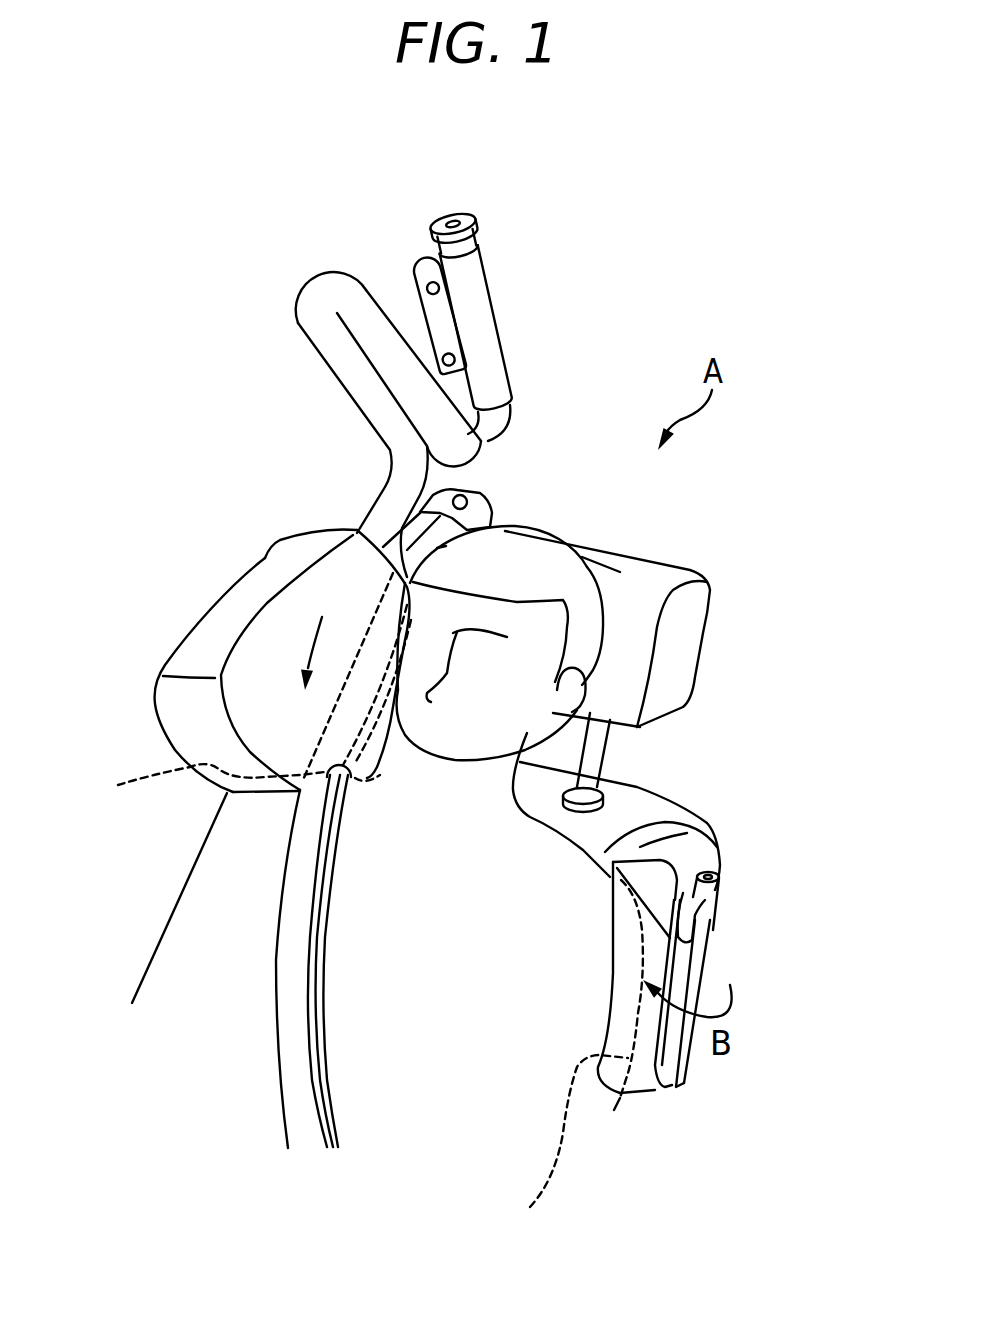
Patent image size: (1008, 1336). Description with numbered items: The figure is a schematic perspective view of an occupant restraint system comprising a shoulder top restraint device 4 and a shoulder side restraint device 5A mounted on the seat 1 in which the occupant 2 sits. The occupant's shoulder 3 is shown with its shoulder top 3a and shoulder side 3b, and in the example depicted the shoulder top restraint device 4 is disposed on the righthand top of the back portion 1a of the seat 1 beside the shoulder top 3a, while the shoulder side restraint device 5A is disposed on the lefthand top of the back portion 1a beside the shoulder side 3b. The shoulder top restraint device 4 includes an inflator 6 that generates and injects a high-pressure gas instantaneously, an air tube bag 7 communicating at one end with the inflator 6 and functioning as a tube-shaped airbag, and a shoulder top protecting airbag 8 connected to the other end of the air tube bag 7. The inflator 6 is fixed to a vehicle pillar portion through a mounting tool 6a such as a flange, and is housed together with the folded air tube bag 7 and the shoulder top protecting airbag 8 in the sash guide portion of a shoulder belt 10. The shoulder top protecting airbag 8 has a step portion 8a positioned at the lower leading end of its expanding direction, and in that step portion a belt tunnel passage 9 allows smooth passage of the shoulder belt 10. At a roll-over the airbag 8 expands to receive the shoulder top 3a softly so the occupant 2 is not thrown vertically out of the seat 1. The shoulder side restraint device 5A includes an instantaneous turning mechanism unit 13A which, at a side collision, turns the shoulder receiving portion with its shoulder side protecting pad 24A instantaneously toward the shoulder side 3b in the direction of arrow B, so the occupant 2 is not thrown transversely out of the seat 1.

The seat 1 is at (743, 835).
The back portion 1a is at (641, 790).
The occupant 2 is at (204, 1083).
The airbag 3 is at (616, 852).
The shoulder top 3a is at (226, 784).
The shoulder side 3b is at (559, 1143).
The shoulder top restraint device 4 is at (226, 560).
The shoulder side restraint device 5A is at (724, 971).
The inflator 6 is at (487, 323).
The mounting tool 6a is at (422, 268).
The air tube bag 7 is at (318, 313).
The shoulder top protecting airbag 8 is at (197, 638).
The step portion 8a is at (332, 790).
The belt tunnel passage 9 is at (372, 690).
The shoulder belt 10 is at (290, 943).
The instantaneous turning mechanism unit 13A is at (743, 881).
The shoulder side protecting pad 24A is at (630, 952).